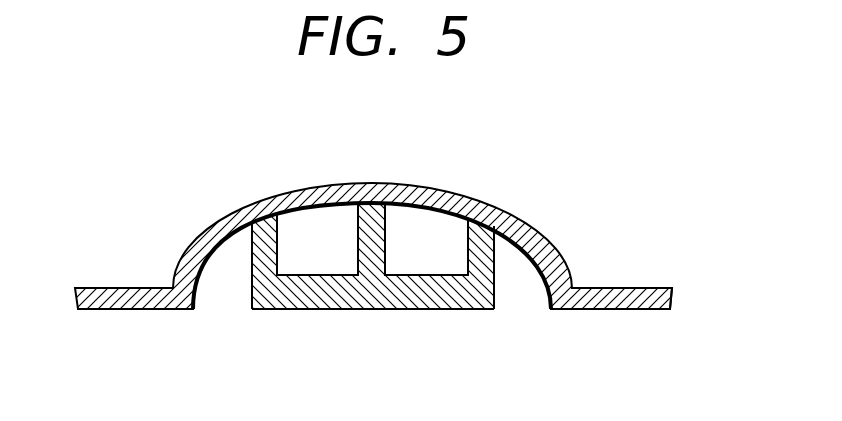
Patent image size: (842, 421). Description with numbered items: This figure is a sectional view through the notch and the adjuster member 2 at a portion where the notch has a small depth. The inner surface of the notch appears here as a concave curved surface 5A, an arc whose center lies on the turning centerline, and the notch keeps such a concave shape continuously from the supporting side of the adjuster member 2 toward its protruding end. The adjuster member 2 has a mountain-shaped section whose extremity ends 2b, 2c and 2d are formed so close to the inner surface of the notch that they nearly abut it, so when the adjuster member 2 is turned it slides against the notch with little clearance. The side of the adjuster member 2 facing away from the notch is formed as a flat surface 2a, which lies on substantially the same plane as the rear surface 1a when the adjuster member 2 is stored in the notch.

The rear surface 1a is at (627, 309).
The adjuster member 2 is at (329, 314).
The flat surface 2a is at (425, 310).
The extremity end 2b is at (263, 210).
The extremity end 2c is at (480, 222).
The extremity end 2d is at (370, 203).
The concave curved surface 5A is at (412, 184).